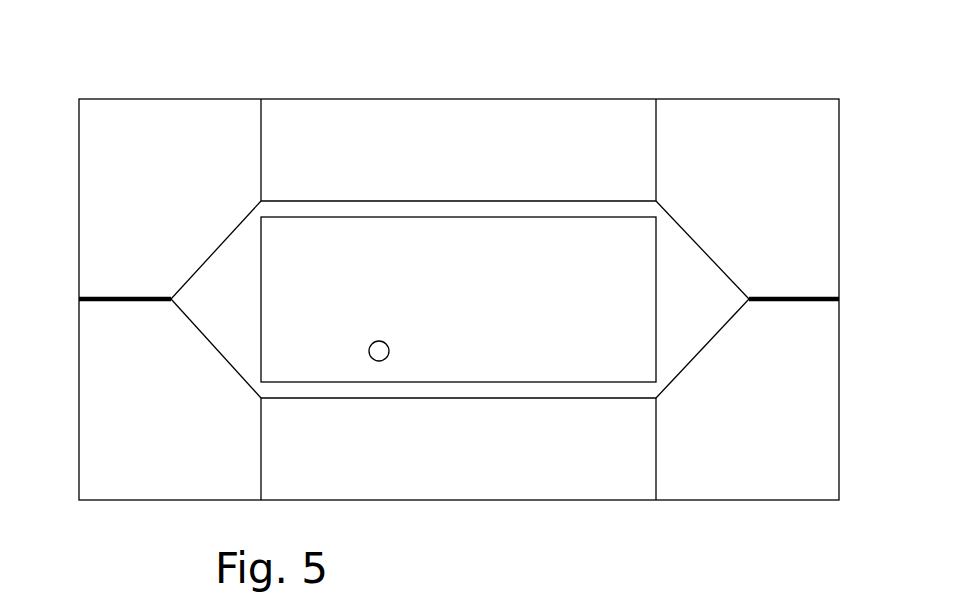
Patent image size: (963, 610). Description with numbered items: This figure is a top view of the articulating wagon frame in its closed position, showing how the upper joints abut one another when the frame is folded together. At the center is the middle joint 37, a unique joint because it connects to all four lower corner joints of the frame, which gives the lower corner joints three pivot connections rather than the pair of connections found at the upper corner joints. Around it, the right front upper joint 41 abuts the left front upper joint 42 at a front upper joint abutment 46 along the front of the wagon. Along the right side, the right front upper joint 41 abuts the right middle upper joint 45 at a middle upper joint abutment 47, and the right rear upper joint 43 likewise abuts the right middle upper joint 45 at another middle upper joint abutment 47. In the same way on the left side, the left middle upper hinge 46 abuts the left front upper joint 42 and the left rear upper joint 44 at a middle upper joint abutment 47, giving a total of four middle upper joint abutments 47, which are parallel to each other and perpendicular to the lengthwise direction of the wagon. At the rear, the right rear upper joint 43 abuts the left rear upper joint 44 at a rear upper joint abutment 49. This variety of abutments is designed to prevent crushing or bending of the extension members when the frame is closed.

The middle joint 37 is at (470, 276).
The right front upper joint 41 is at (763, 118).
The left front upper joint 42 is at (742, 483).
The right rear upper joint 43 is at (163, 140).
The left rear upper joint 44 is at (135, 480).
The right middle upper joint 45 is at (512, 130).
The front upper joint abutment 46 is at (793, 297).
The middle upper joint abutment 47 is at (261, 158).
The rear upper joint abutment 49 is at (117, 297).